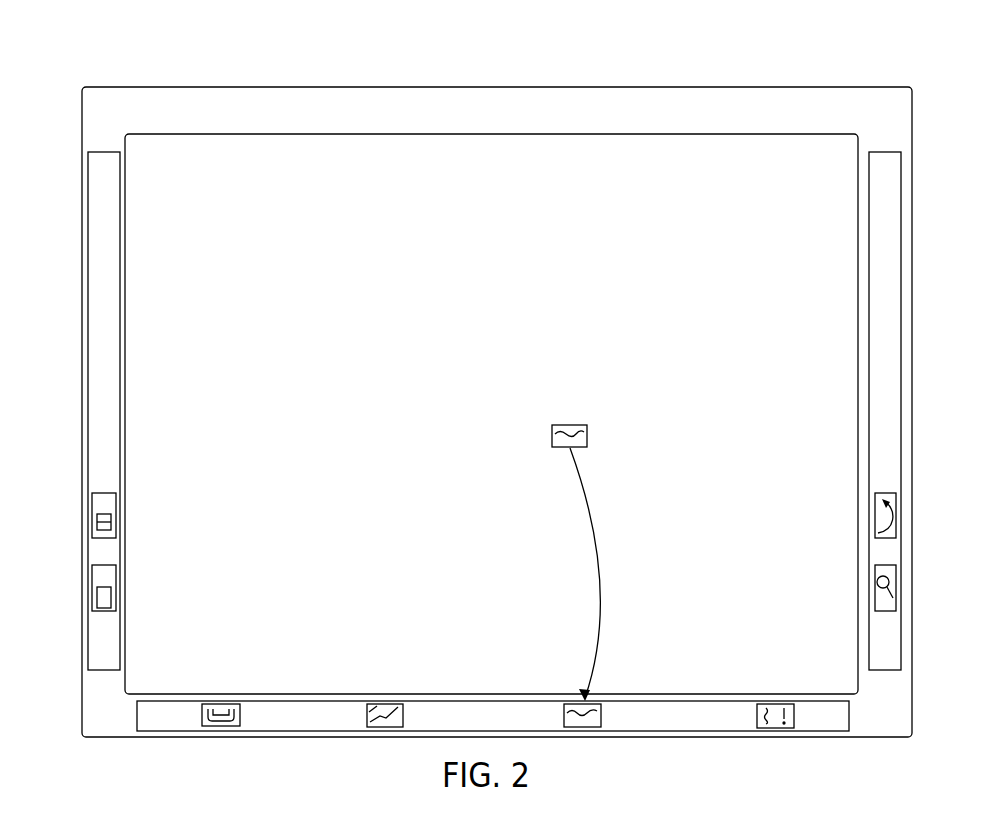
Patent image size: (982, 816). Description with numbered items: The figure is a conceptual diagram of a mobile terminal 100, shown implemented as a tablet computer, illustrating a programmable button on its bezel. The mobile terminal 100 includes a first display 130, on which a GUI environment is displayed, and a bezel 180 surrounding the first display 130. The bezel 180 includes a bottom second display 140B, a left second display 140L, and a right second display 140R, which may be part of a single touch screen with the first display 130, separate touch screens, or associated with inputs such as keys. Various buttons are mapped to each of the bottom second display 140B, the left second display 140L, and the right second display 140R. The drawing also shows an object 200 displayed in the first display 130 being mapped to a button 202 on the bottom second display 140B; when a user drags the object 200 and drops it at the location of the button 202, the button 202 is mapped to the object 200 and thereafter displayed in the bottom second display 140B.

The mobile terminal 100 is at (564, 74).
The bezel 180 is at (912, 150).
The first display 130 is at (859, 672).
The left second display 140L is at (88, 357).
The right second display 140R is at (901, 205).
The bottom second display 140B is at (650, 731).
The object 200 is at (588, 435).
The button 202 is at (583, 728).